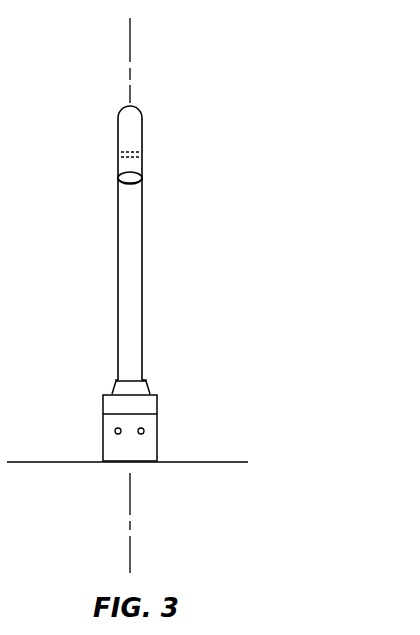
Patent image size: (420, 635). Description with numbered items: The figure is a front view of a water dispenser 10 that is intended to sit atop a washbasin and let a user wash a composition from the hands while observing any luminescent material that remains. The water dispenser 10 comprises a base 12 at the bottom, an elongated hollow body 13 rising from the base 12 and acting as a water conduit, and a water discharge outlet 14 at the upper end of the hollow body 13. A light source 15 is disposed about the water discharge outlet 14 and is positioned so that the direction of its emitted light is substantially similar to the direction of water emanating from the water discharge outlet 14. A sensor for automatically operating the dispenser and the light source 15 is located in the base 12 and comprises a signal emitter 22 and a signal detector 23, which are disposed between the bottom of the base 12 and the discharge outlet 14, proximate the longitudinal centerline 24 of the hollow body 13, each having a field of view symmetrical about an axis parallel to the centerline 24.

The water dispenser 10 is at (182, 152).
The base 12 is at (157, 415).
The hollow body 13 is at (127, 283).
The water discharge outlet 14 is at (142, 178).
The light source 15 is at (123, 150).
The signal emitter 22 is at (145, 431).
The signal detector 23 is at (114, 431).
The longitudinal centerline 24 is at (130, 40).